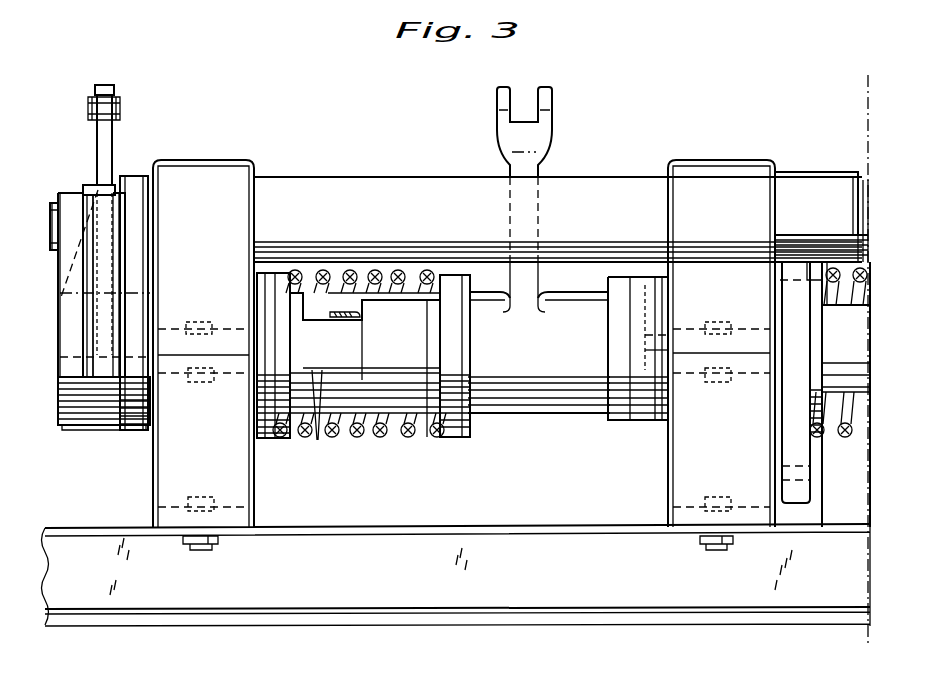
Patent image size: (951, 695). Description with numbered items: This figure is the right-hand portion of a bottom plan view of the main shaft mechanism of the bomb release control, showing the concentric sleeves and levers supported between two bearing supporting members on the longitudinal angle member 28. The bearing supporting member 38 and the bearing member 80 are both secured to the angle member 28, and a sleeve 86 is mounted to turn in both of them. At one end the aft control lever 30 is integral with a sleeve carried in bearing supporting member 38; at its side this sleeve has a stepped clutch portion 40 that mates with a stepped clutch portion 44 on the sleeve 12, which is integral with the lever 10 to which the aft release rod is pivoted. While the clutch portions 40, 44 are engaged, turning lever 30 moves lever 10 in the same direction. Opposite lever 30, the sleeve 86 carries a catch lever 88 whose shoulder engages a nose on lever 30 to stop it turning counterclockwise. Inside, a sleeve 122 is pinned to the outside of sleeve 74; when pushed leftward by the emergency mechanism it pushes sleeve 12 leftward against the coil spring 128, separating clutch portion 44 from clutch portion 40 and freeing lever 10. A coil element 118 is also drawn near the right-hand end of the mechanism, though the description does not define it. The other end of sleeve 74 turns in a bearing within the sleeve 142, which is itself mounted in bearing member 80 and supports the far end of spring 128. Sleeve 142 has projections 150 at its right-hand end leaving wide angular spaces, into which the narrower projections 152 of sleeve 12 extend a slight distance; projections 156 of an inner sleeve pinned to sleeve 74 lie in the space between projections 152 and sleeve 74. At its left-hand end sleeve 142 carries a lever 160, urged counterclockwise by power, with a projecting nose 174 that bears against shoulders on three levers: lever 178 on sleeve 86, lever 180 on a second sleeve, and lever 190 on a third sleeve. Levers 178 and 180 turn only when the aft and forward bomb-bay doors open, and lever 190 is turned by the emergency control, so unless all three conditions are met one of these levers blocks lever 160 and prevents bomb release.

The lever 10 is at (547, 152).
The sleeve 12 is at (556, 408).
The angle member 28 is at (562, 606).
The lever 30 is at (808, 237).
The bearing supporting member 38 is at (720, 172).
The clutch portion 40 is at (658, 421).
The clutch portion 44 is at (620, 422).
The sleeve 74 is at (352, 358).
The bearing member 80 is at (202, 172).
The sleeve 86 is at (427, 188).
The catch lever 88 is at (812, 435).
The spring 118 is at (865, 273).
The sleeve 122 is at (871, 362).
The coil spring 128 is at (408, 437).
The sleeve 142 is at (90, 317).
The projections 150 is at (316, 368).
The projections 152 is at (338, 303).
The projections 156 is at (360, 315).
The lever 160 is at (110, 140).
The projecting nose 174 is at (123, 420).
The lever 178 is at (133, 253).
The lever 180 is at (102, 195).
The lever 190 is at (68, 195).